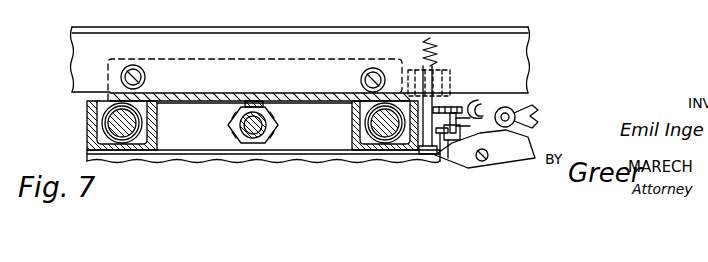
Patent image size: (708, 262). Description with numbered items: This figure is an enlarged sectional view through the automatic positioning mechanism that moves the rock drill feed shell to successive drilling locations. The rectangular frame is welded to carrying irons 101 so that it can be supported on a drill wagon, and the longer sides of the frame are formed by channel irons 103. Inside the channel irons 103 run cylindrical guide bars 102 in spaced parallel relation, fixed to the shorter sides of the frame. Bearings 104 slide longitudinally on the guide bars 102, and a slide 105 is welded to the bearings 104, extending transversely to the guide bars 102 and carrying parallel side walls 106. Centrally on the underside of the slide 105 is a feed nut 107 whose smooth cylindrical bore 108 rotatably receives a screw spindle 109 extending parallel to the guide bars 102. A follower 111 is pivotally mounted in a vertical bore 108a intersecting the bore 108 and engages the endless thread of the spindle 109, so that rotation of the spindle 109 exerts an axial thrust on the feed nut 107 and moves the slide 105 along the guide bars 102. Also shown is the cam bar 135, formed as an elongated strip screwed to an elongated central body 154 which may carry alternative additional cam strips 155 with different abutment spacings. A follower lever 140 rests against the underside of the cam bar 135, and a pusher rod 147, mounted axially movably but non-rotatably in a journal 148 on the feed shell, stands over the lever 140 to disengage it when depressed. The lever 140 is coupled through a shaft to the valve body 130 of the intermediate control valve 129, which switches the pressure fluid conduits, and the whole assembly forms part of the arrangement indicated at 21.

The slide assembly 21 is at (402, 26).
The carrying irons 101 is at (135, 157).
The guide bars 102 is at (103, 112).
The channel irons 103 is at (92, 137).
The bearings 104 is at (147, 111).
The slide 105 is at (177, 83).
The side walls 106 is at (240, 58).
The feed nut 107 is at (258, 134).
The bore 108 is at (246, 134).
The vertical bore 108a is at (277, 87).
The screw spindle 109 is at (262, 130).
The follower 111 is at (249, 108).
The intermediate control valve 129 is at (535, 113).
The valve body 130 is at (480, 116).
The cam bar 135 is at (460, 162).
The follower lever 140 is at (464, 160).
The pusher rod 147 is at (427, 107).
The journal 148 is at (445, 72).
The central body 154 is at (457, 133).
The additional cam strips 155 is at (456, 128).